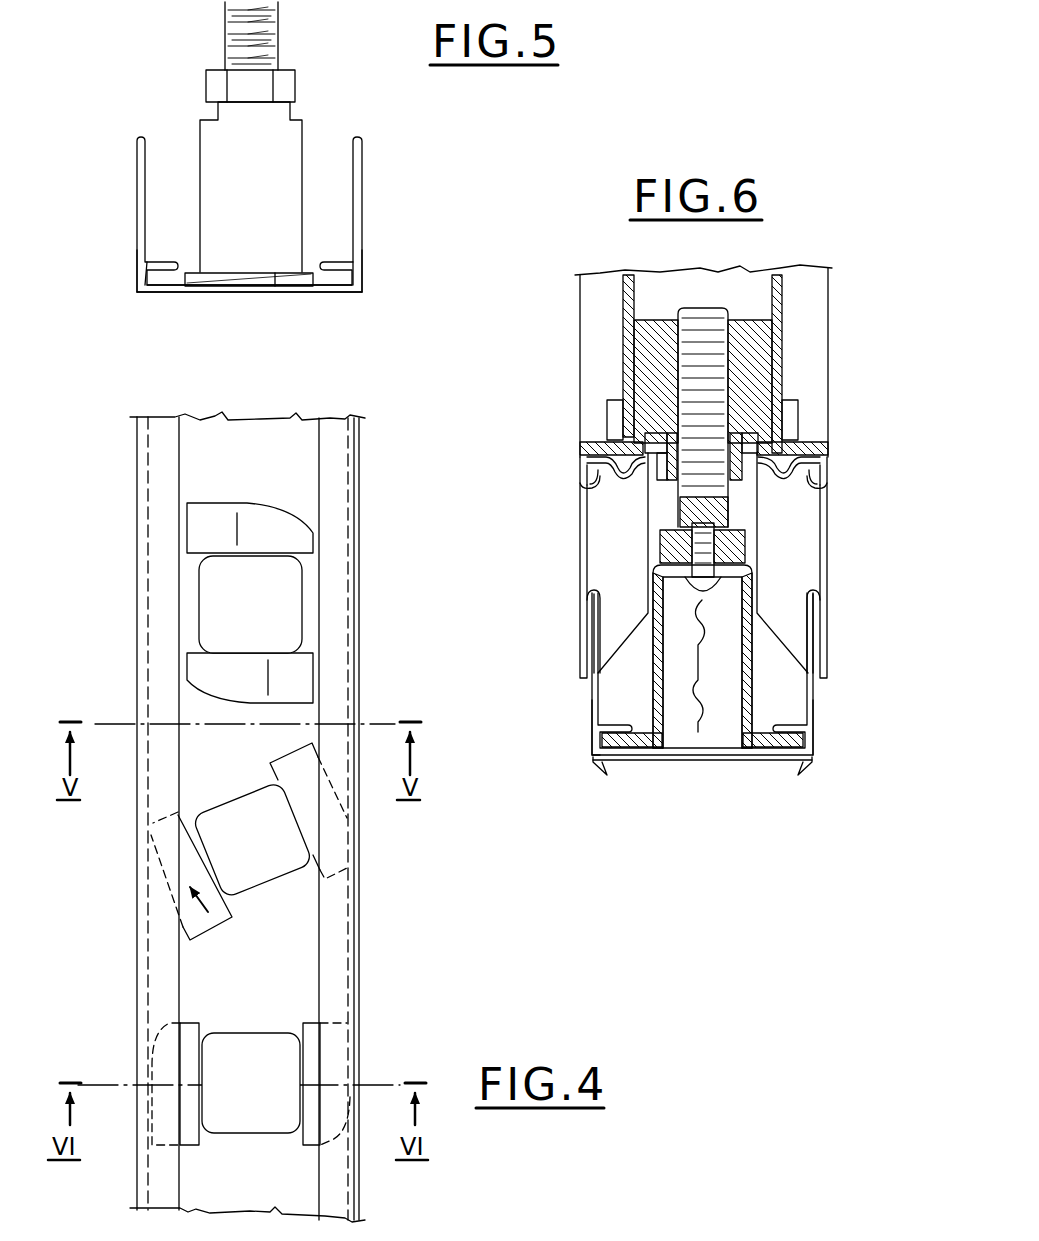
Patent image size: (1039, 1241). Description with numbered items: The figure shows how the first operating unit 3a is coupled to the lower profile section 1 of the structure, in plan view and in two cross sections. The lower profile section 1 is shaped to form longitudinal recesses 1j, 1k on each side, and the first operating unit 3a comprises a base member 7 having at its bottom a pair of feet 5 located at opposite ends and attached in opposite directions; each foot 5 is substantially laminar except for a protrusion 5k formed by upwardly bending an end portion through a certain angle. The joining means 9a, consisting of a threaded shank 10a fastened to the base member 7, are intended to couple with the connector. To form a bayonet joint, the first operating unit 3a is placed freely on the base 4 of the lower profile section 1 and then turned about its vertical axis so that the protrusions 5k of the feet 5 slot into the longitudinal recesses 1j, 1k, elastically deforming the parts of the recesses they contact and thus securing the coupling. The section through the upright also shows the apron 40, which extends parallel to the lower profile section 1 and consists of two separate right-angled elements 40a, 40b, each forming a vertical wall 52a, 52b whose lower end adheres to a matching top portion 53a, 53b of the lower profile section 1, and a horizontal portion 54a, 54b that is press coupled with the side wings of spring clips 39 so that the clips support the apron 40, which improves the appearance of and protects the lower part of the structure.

In FIG. 5, the lower profile section 1 is at (124, 188).
In FIG. 6, the lower profile section 1 is at (808, 692).
In FIG. 5, the longitudinal recess 1j is at (136, 286).
In FIG. 4, the longitudinal recess 1j is at (155, 406).
In FIG. 6, the longitudinal recess 1j is at (580, 754).
In FIG. 5, the longitudinal recess 1k is at (366, 280).
In FIG. 4, the longitudinal recess 1k is at (338, 410).
In FIG. 6, the longitudinal recess 1k is at (813, 768).
In FIG. 4, the first operating unit 3a is at (308, 588).
In FIG. 5, the base 4 is at (328, 302).
In FIG. 4, the base 4 is at (282, 978).
In FIG. 6, the base 4 is at (700, 768).
In FIG. 5, the foot 5 is at (217, 283).
In FIG. 4, the foot 5 is at (277, 528).
In FIG. 6, the foot 5 is at (626, 747).
In FIG. 5, the protrusion 5k is at (277, 283).
In FIG. 4, the protrusion 5k is at (211, 515).
In FIG. 5, the base member 7 is at (285, 130).
In FIG. 6, the base member 7 is at (683, 657).
In FIG. 5, the joining means 9a is at (297, 50).
In FIG. 6, the joining means 9a is at (703, 442).
In FIG. 5, the threaded shank 10a is at (238, 33).
In FIG. 6, the threaded shank 10a is at (640, 350).
In FIG. 6, the spring clip 39 is at (590, 480).
In FIG. 6, the apron 40 is at (838, 538).
In FIG. 6, the right-angled element 40a is at (834, 496).
In FIG. 6, the right-angled element 40b is at (568, 470).
In FIG. 6, the vertical wall 52a is at (826, 572).
In FIG. 6, the vertical wall 52b is at (578, 537).
In FIG. 6, the top portion 53a is at (815, 592).
In FIG. 6, the top portion 53b is at (597, 594).
In FIG. 6, the horizontal portion 54a is at (806, 452).
In FIG. 6, the horizontal portion 54b is at (602, 440).